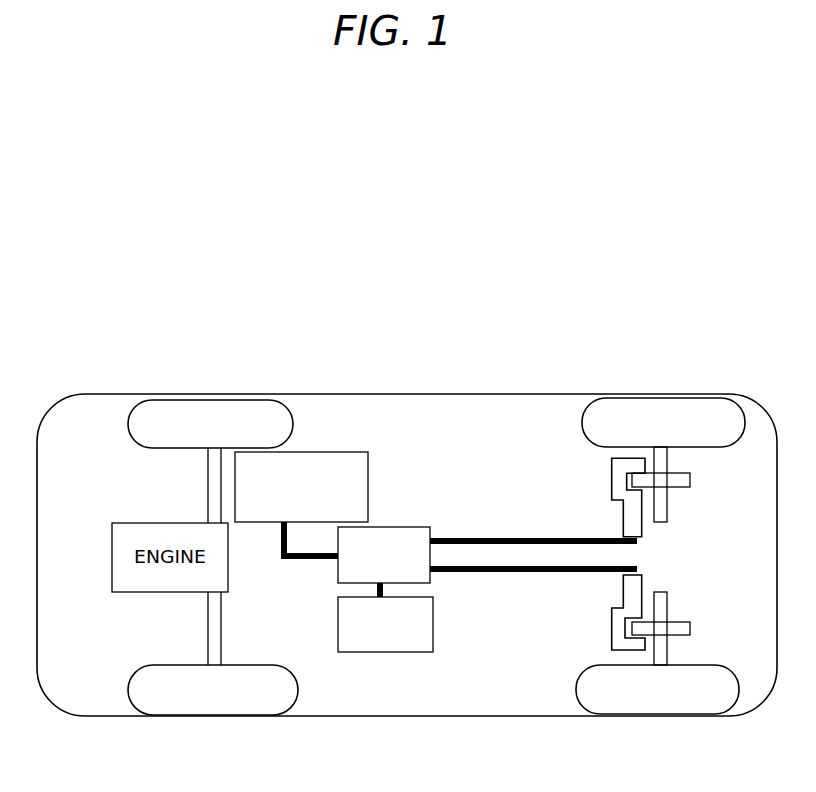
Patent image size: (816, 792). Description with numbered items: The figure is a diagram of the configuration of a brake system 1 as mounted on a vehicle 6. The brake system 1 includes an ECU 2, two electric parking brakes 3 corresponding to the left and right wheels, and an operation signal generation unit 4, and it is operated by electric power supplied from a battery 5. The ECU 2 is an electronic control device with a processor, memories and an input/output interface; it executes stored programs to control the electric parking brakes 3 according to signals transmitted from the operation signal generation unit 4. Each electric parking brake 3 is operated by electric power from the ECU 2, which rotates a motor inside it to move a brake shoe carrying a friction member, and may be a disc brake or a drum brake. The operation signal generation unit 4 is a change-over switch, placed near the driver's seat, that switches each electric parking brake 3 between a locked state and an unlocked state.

The brake system 1 is at (524, 474).
The ECU 2 is at (432, 529).
The electric parking brake 3 is at (612, 487).
The operation signal generation unit 4 is at (371, 481).
The battery 5 is at (434, 626).
The vehicle 6 is at (702, 393).